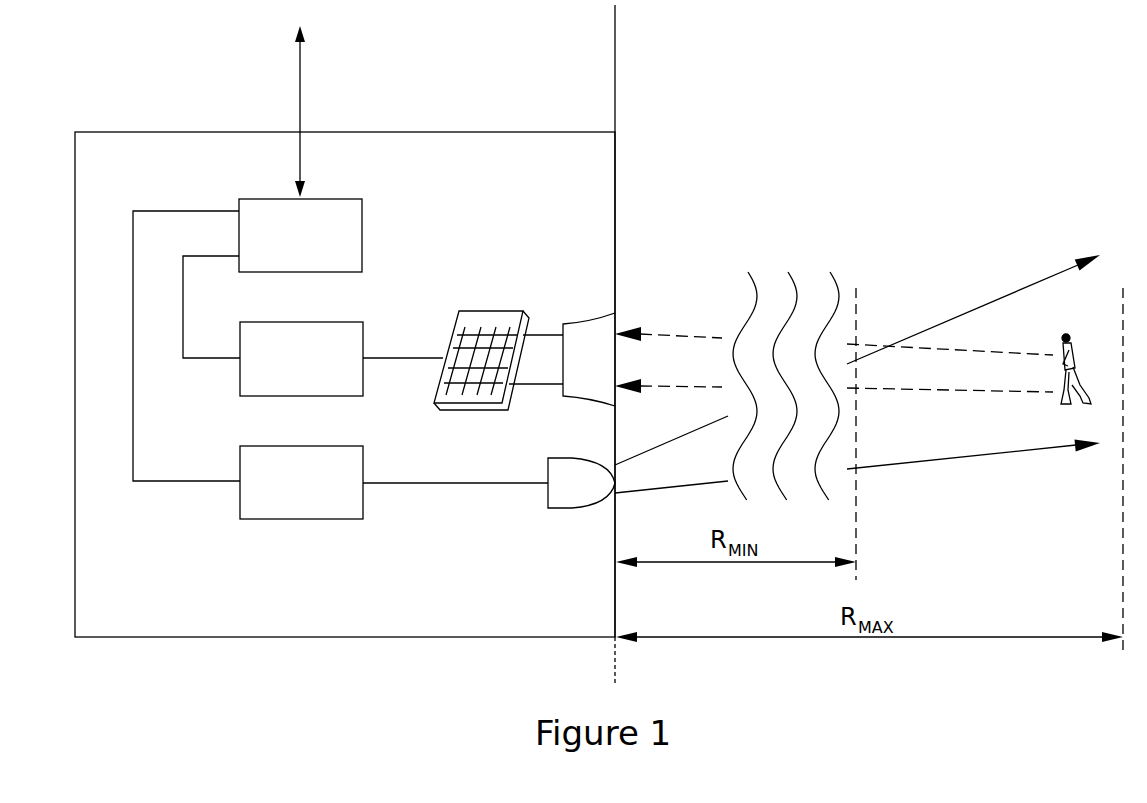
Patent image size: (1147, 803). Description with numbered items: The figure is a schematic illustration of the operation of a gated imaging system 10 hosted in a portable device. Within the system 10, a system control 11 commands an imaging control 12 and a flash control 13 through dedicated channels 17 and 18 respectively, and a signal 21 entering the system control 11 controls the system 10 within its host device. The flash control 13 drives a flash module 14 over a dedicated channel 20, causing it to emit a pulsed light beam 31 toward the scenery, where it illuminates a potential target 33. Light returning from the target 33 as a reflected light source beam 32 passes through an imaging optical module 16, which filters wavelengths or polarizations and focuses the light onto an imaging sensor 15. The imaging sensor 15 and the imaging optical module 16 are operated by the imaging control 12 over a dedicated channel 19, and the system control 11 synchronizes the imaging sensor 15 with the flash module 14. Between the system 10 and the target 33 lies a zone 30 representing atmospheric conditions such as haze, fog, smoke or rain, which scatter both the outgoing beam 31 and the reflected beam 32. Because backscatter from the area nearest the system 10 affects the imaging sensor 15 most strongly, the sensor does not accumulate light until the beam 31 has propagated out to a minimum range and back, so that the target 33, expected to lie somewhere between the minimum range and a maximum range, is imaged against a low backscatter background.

The system 10 is at (122, 131).
The system control 11 is at (277, 197).
The imaging control 12 is at (292, 320).
The flash control 13 is at (292, 445).
The flash module 14 is at (547, 468).
The imaging sensor 15 is at (482, 310).
The imaging optical module 16 is at (588, 318).
The dedicated channel 17 is at (223, 253).
The dedicated channel 18 is at (187, 208).
The dedicated channel 19 is at (403, 357).
The dedicated channel 20 is at (427, 482).
The signal 21 is at (298, 80).
The zone of atmospheric conditions 30 is at (770, 273).
The light beam 31 is at (957, 463).
The reflected light source beam 32 is at (950, 392).
The potential target 33 is at (1068, 336).